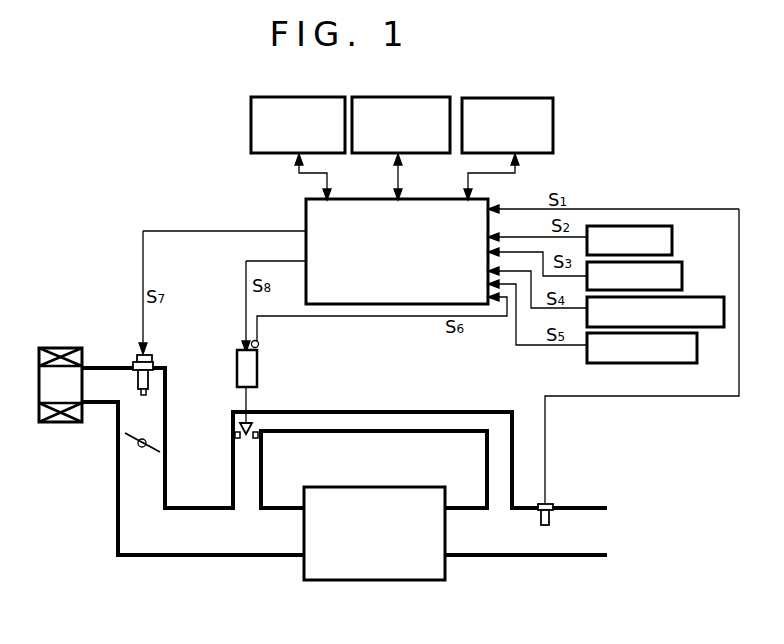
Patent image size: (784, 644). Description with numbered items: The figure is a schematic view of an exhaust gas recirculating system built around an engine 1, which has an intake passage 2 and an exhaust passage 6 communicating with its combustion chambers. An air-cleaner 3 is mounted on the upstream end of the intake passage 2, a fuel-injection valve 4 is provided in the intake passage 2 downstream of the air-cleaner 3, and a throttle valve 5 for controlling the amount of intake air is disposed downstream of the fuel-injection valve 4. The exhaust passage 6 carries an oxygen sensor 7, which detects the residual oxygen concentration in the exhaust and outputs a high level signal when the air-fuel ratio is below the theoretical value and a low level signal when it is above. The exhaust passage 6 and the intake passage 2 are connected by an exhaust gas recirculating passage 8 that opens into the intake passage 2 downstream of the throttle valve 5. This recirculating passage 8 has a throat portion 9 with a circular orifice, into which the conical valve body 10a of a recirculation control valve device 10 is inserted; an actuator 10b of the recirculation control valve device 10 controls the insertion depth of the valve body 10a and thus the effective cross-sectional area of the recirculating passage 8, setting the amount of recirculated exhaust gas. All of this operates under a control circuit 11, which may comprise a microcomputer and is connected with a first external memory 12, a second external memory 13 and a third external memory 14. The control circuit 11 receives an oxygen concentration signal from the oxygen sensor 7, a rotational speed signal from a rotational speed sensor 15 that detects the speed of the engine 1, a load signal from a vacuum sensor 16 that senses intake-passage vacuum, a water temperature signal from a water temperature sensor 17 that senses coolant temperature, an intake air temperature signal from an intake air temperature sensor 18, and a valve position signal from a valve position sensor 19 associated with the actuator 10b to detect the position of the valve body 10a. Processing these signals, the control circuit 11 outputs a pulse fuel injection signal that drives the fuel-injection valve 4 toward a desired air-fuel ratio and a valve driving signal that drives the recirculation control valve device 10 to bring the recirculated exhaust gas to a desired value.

The engine 1 is at (358, 543).
The intake passage 2 is at (188, 556).
The air-cleaner 3 is at (62, 423).
The fuel-injection valve 4 is at (152, 358).
The throttle valve 5 is at (146, 441).
The exhaust passage 6 is at (516, 557).
The oxygen sensor 7 is at (553, 515).
The exhaust gas recirculating passage 8 is at (385, 432).
The throat portion 9 is at (254, 440).
The recirculation control valve device 10 is at (247, 347).
The conical valve body 10a is at (256, 428).
The actuator 10b is at (257, 373).
The control circuit 11 is at (306, 213).
The first external memory 12 is at (299, 96).
The second external memory 13 is at (400, 96).
The third external memory 14 is at (521, 97).
The rotational speed sensor 15 is at (672, 241).
The vacuum sensor 16 is at (682, 276).
The water temperature sensor 17 is at (704, 297).
The intake air temperature sensor 18 is at (675, 363).
The valve position sensor 19 is at (258, 341).